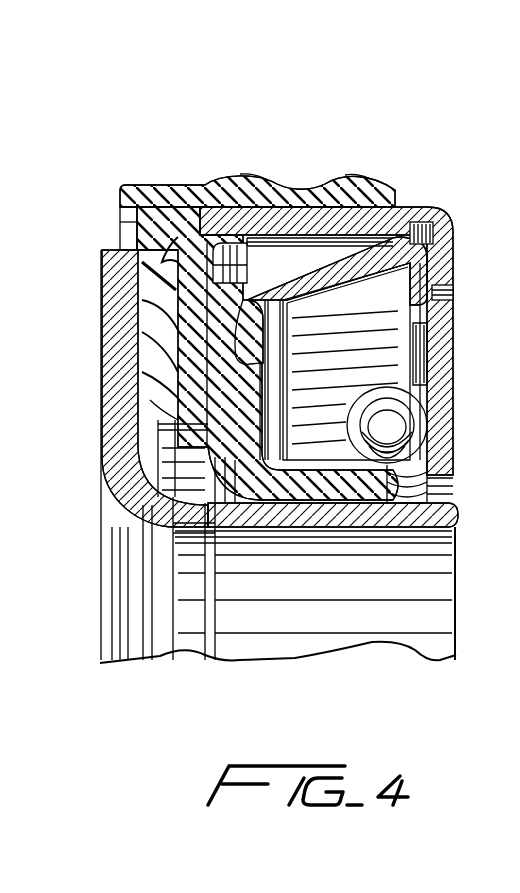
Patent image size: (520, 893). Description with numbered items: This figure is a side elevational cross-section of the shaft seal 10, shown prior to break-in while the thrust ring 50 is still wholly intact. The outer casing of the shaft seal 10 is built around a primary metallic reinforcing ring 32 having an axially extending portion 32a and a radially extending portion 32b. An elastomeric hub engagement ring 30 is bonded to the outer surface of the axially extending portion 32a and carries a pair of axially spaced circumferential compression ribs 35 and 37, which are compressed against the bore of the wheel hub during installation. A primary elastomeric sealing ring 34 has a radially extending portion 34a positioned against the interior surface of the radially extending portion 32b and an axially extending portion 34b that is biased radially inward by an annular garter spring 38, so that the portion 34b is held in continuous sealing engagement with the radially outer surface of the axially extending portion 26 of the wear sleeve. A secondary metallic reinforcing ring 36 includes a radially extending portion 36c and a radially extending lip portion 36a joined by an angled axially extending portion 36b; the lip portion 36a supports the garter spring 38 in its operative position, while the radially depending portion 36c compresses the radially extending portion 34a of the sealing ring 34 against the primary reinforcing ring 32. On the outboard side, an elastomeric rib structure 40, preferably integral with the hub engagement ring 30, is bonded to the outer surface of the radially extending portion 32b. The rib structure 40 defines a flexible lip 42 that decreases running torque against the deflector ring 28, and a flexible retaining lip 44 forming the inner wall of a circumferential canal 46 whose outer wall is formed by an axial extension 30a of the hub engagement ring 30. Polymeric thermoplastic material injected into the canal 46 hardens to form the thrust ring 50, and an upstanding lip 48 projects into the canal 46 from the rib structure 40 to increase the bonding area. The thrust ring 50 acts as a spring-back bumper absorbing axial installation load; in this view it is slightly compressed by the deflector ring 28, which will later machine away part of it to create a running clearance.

The shaft seal 10 is at (210, 88).
The axially extending portion of wear sleeve 26 is at (284, 497).
The deflector ring 28 is at (120, 400).
The hub engagement ring 30 is at (193, 183).
The axial extension of hub engagement ring 30a is at (135, 184).
The primary metallic reinforcing ring 32 is at (196, 228).
The axially extending portion of primary reinforcing ring 32a is at (257, 221).
The radially extending portion of primary reinforcing ring 32b is at (178, 447).
The primary elastomeric sealing ring 34 is at (245, 512).
The radially extending portion of primary sealing ring 34a is at (206, 456).
The axially extending portion of primary sealing ring 34b is at (330, 466).
The compression rib 35 is at (270, 186).
The secondary metallic reinforcing ring 36 is at (418, 223).
The radially extending lip portion of secondary reinforcing ring 36a is at (453, 297).
The angled axially extending portion of secondary reinforcing ring 36b is at (363, 262).
The radially extending portion of secondary reinforcing ring 36c is at (165, 422).
The compression rib 37 is at (357, 176).
The garter spring 38 is at (378, 461).
The rib structure 40 is at (178, 348).
The flexible lip 42 is at (150, 338).
The flexible retaining lip 44 is at (150, 320).
The circumferential canal 46 is at (178, 228).
The upstanding lip 48 is at (157, 292).
The thrust ring 50 is at (140, 241).